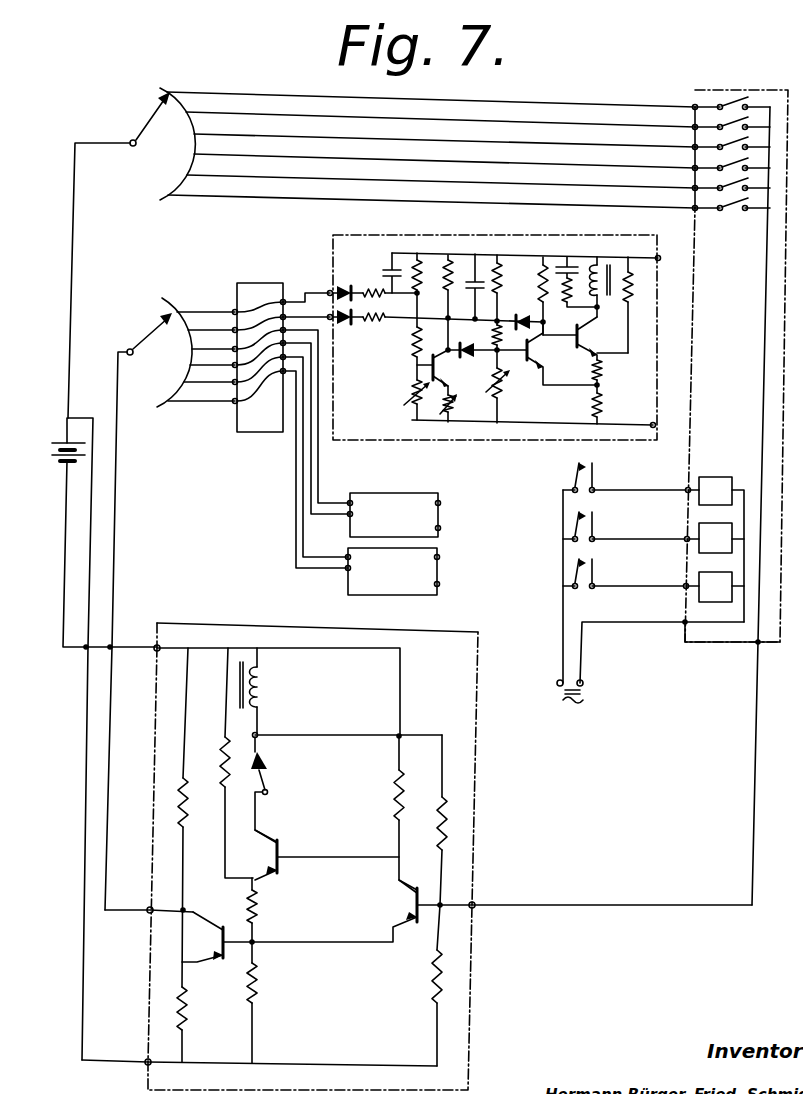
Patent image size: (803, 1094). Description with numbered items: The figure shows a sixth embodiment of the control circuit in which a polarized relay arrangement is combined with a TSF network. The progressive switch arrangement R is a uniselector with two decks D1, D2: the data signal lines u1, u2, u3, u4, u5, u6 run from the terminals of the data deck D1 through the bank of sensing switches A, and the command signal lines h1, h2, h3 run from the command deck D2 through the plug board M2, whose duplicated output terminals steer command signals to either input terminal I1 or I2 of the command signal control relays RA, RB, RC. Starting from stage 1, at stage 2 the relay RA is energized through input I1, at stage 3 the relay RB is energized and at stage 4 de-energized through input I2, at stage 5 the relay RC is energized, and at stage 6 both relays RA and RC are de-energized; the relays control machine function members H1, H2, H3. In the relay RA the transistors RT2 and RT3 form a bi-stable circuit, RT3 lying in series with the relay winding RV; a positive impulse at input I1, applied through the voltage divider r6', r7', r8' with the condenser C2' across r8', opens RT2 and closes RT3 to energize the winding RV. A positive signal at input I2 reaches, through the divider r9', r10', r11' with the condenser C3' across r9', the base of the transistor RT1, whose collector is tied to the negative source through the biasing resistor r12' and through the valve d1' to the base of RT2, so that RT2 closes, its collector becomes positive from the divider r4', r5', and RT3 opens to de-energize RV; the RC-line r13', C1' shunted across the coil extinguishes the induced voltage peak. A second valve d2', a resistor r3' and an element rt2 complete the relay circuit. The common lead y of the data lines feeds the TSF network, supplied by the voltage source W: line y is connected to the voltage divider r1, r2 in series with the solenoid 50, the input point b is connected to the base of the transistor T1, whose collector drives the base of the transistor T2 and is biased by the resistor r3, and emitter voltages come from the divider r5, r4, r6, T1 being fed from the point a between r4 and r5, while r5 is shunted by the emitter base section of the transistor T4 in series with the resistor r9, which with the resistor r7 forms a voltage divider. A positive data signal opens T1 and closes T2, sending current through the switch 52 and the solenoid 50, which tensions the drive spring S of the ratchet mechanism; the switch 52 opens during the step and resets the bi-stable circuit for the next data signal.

The deck D1 of the uniselector D1 is at (131, 140).
The command signal deck D2 is at (127, 348).
The progressive switch arrangement R is at (173, 216).
The data signal line u1 is at (431, 91).
The data signal line u2 is at (440, 111).
The data signal line u3 is at (444, 132).
The data signal line u4 is at (444, 153).
The data signal line u5 is at (441, 173).
The data signal line u6 is at (431, 193).
The first stage 1 is at (207, 194).
The stage 2 is at (213, 214).
The stage 3 is at (215, 234).
The stage 4 is at (214, 253).
The stage 5 is at (211, 272).
The stage 6 is at (203, 292).
The switch bank A is at (753, 90).
The plug board M2 is at (262, 283).
The command signal line h1 is at (318, 293).
The command signal line h2 is at (319, 465).
The command signal line h3 is at (305, 534).
The input terminal I1 is at (334, 322).
The input terminal I2 is at (334, 291).
The command signal control relay RA is at (362, 236).
The command signal control relay RB is at (413, 529).
The command signal control relay RC is at (410, 586).
The condenser C3' is at (398, 251).
The voltage divider resistor r9' is at (425, 252).
The voltage divider resistor r10' is at (398, 336).
The voltage divider resistor r11' is at (398, 400).
The biasing resistor r12' is at (459, 279).
The transistor RT1 is at (440, 368).
The thermistor rt2 is at (452, 412).
The valve d1' is at (471, 338).
The diode d2' is at (517, 307).
The condenser C2' is at (495, 264).
The voltage divider resistor r8' is at (526, 267).
The voltage divider resistor r7' is at (513, 354).
The voltage divider resistor r6' is at (510, 395).
The transistor RT2 is at (547, 353).
The transistor RT3 is at (585, 338).
The condenser of the RC-line C1' is at (574, 243).
The resistor of the RC-line r13' is at (591, 258).
The relay winding RV is at (604, 262).
The resistor r3' is at (638, 305).
The voltage divider resistor r4' is at (608, 376).
The voltage divider resistor r5' is at (608, 408).
The heater 1 H1 is at (653, 542).
The heater 2 H2 is at (653, 532).
The heater 3 H3 is at (653, 580).
The voltage source W is at (57, 450).
The TSF network TSF is at (250, 620).
The solenoid 50 is at (270, 675).
The relay contact S is at (266, 699).
The switch 52 is at (272, 775).
The voltage divider resistor r6 is at (224, 763).
The resistor r7 is at (195, 817).
The resistor r9 is at (192, 1024).
The transistor T2 is at (268, 860).
The biasing resistor r3 is at (394, 813).
The voltage divider resistor r1 is at (437, 832).
The transistor T1 is at (410, 902).
The input point b is at (440, 907).
The common lead y is at (622, 904).
The voltage divider resistor r2 is at (430, 985).
The voltage divider resistor r4 is at (264, 920).
The voltage divider resistor r5 is at (264, 1013).
The point a is at (254, 944).
The transistor T4 is at (220, 926).